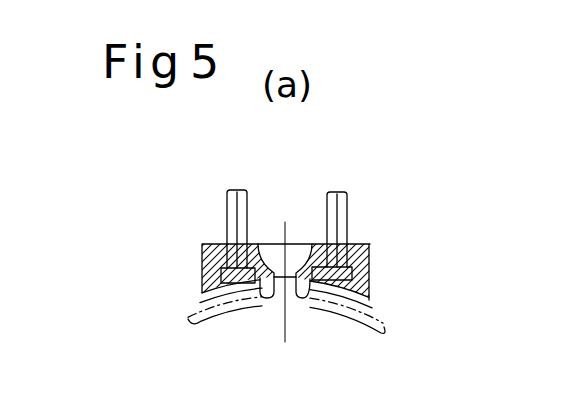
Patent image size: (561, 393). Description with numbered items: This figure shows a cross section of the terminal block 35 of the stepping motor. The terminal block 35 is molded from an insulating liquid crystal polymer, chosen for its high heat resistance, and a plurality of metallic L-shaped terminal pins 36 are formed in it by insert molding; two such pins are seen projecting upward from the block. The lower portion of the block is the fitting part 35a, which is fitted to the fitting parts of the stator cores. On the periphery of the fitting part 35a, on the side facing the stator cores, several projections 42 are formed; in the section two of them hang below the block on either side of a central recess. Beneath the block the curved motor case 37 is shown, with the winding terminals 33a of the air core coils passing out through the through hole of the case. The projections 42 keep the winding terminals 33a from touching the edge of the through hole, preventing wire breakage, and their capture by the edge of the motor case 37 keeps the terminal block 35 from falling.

The winding terminal 33a is at (185, 320).
The terminal block 35 is at (370, 269).
The fitting part 35a is at (297, 277).
The terminal pin 36 is at (238, 189).
The motor case 37 is at (183, 308).
The projection 42 is at (262, 300).